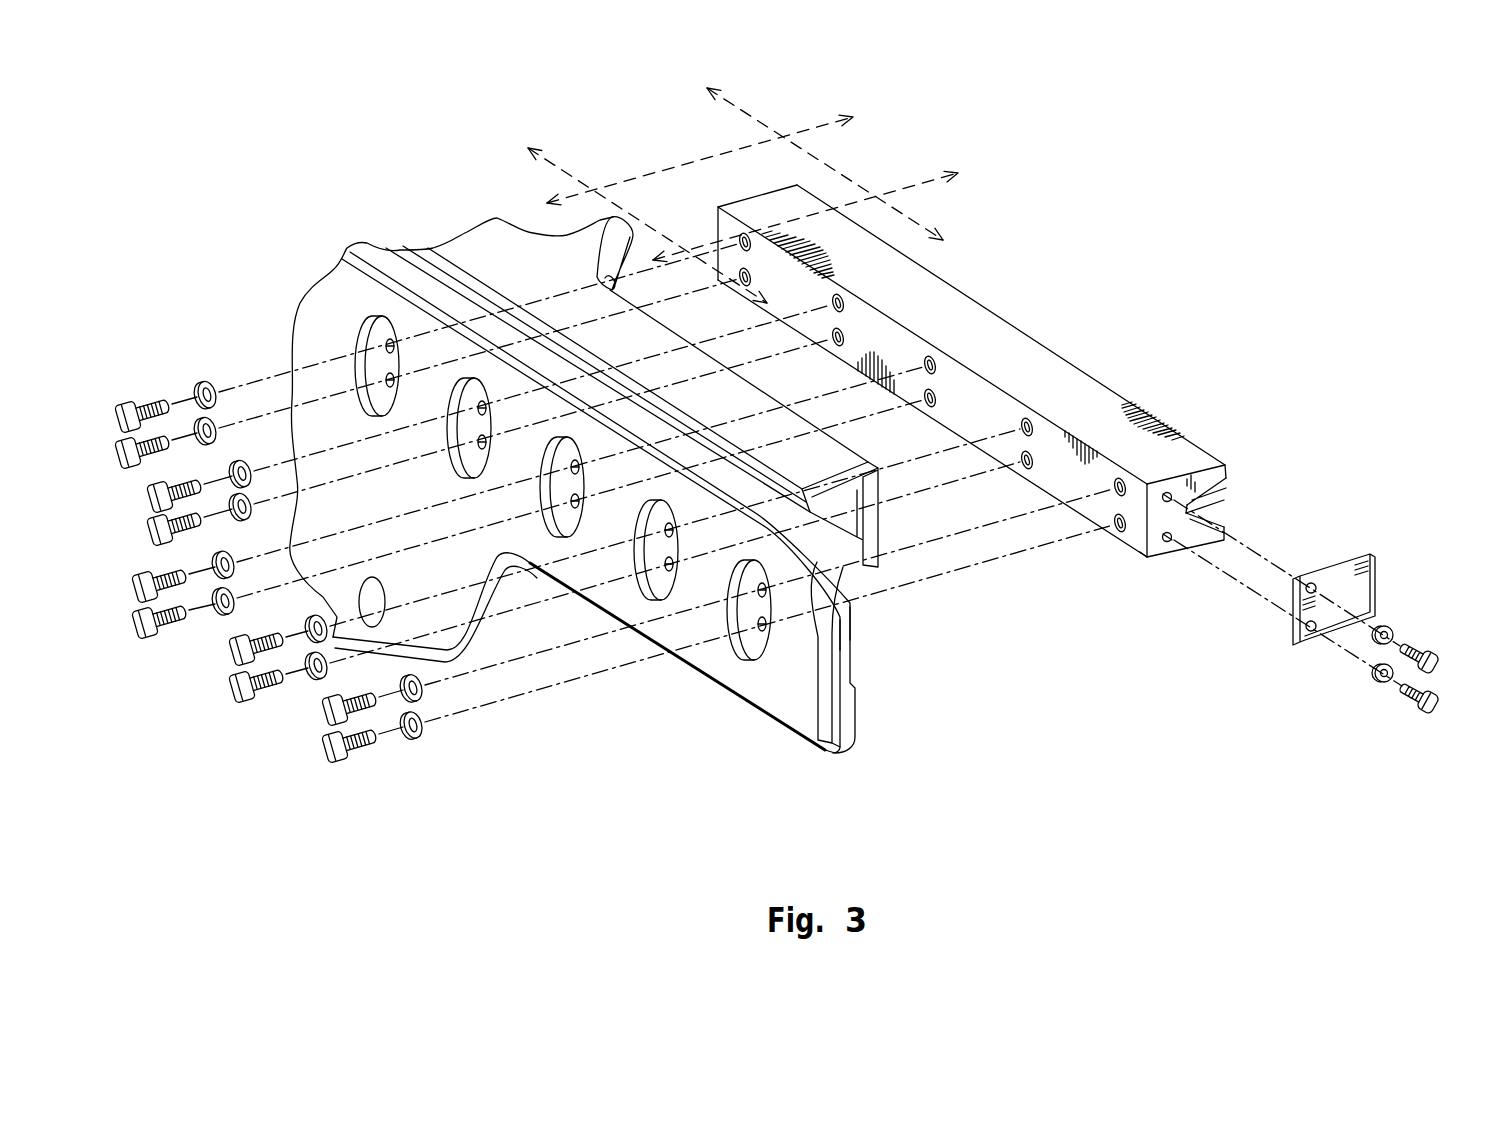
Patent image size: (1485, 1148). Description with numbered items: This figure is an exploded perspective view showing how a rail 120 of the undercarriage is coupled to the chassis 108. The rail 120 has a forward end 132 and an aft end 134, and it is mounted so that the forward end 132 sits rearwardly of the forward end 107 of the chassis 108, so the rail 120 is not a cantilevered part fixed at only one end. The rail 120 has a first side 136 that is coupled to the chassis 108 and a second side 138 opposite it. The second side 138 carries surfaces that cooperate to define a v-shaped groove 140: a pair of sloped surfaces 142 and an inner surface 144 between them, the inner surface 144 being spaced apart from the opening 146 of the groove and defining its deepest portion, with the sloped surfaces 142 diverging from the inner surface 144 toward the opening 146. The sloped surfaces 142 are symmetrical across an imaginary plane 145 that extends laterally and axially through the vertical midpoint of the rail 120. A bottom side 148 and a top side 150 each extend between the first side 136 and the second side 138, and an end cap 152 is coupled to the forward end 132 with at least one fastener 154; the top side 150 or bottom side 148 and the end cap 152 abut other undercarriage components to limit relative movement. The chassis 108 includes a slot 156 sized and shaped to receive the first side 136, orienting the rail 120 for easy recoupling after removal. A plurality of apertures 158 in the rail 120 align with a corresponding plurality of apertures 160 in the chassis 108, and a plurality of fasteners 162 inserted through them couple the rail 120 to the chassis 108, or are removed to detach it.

The forward end of the chassis 107 is at (675, 516).
The chassis 108 is at (385, 280).
The rail 120 is at (1092, 367).
The forward end of the rail 132 is at (1150, 578).
The aft end of the rail 134 is at (753, 190).
The first side of the rail 136 is at (1062, 476).
The second side of the rail 138 is at (1138, 413).
The v-shaped groove 140 is at (1306, 465).
The sloped surfaces 142 is at (1223, 481).
The inner surface 144 is at (1205, 510).
The imaginary plane 145 is at (673, 193).
The opening of the v-shaped groove 146 is at (1315, 508).
The bottom side of the rail 148 is at (1168, 560).
The top side of the rail 150 is at (1075, 400).
The end cap 152 is at (1337, 618).
The fastener 154 is at (1435, 672).
The slot 156 is at (860, 655).
The apertures of the rail 158 is at (845, 303).
The apertures of the chassis 160 is at (650, 560).
The fasteners 162 is at (237, 643).